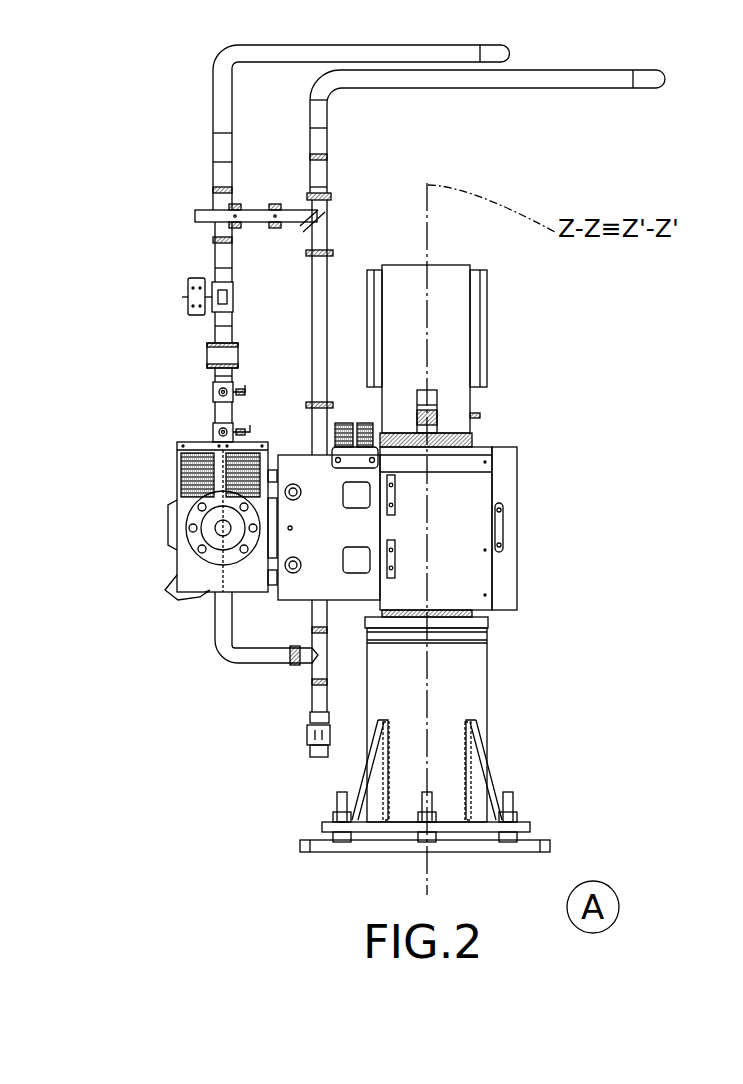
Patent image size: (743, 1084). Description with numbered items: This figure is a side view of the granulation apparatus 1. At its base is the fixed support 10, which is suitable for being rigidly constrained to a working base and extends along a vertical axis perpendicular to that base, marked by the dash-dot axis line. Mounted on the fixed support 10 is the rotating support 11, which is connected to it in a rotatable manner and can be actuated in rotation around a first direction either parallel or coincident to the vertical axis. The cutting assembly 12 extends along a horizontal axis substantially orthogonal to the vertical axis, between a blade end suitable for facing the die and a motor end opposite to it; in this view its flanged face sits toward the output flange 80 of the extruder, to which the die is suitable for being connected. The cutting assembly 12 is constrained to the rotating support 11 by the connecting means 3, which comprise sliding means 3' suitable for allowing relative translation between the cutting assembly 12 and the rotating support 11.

The granulation apparatus 1 is at (675, 180).
The connecting means 3 is at (304, 503).
The sliding means 3' is at (212, 336).
The fixed support 10 is at (497, 703).
The rotating support 11 is at (530, 497).
The cutting assembly 12 is at (202, 610).
The output flange 80 is at (210, 557).